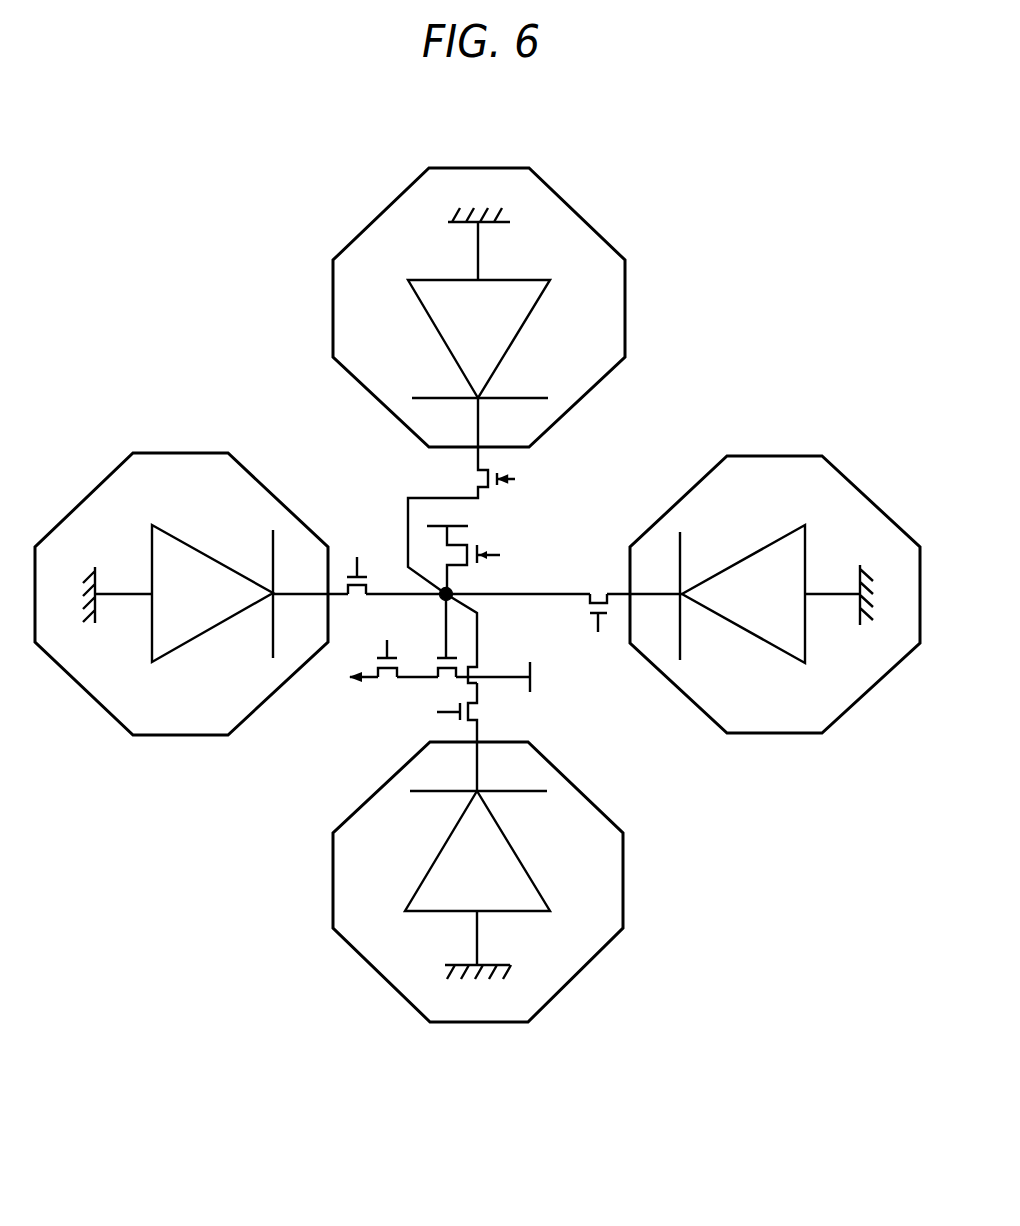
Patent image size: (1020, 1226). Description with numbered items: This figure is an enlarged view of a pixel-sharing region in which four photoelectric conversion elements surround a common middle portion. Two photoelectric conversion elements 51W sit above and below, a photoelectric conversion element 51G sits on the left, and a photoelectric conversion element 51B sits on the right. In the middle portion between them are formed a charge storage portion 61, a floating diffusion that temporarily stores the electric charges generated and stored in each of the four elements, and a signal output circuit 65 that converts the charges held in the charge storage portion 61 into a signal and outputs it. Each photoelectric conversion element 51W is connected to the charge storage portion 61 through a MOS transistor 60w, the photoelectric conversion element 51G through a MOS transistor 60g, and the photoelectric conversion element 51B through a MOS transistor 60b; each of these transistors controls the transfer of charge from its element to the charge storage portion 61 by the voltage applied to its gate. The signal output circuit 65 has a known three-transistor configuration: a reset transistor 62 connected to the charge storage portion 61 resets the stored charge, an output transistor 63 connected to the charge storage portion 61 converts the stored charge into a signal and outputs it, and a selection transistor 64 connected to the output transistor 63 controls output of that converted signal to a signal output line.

The photoelectric conversion element 51W is at (577, 210).
The photoelectric conversion element 51G is at (183, 453).
The photoelectric conversion element 51B is at (777, 456).
The MOS transistor 60w is at (517, 480).
The MOS transistor 60g is at (364, 570).
The MOS transistor 60b is at (600, 633).
The charge storage portion 61 is at (454, 589).
The reset transistor 62 is at (490, 550).
The output transistor 63 is at (440, 653).
The selection transistor 64 is at (380, 653).
The signal output circuit 65 is at (353, 698).